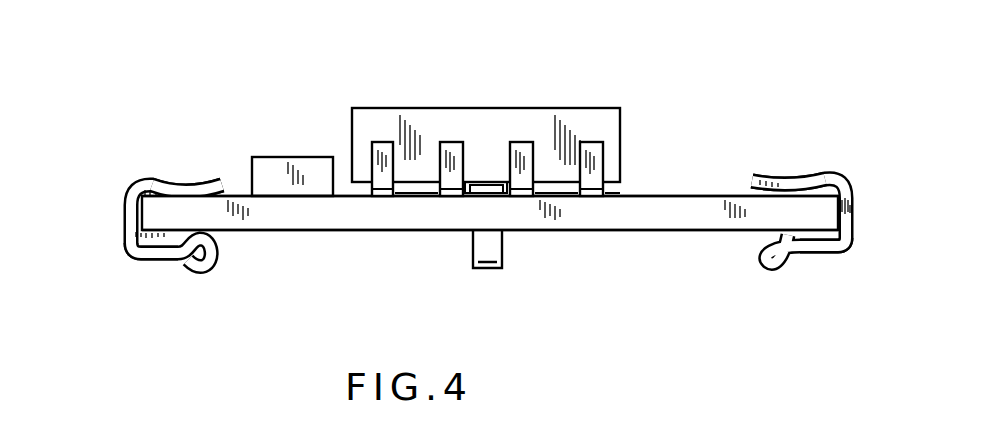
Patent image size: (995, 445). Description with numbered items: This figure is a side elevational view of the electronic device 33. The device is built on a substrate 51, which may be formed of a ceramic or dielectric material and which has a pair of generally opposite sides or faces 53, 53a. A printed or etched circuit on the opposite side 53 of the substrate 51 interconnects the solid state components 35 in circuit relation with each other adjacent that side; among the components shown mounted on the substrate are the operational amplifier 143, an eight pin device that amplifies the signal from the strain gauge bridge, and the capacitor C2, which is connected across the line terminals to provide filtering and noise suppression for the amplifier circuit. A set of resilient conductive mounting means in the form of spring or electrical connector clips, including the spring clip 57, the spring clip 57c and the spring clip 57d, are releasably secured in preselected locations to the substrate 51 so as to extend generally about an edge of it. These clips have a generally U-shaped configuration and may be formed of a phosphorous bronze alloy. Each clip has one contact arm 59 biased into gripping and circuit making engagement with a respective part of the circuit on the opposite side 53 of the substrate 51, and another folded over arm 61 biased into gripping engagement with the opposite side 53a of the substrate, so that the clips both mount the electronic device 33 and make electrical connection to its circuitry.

The electronic device 33 is at (483, 175).
The solid state components 35 is at (501, 119).
The substrate 51 is at (314, 232).
The opposite side 53 is at (670, 193).
The opposite side 53a is at (666, 231).
The spring clip 57 is at (122, 203).
The spring clip 57c is at (853, 196).
The spring clip 57d is at (473, 264).
The contact arm 59 is at (182, 183).
The folded over arm 61 is at (158, 262).
The operational amplifier 143 is at (465, 118).
The capacitor C2 is at (290, 162).